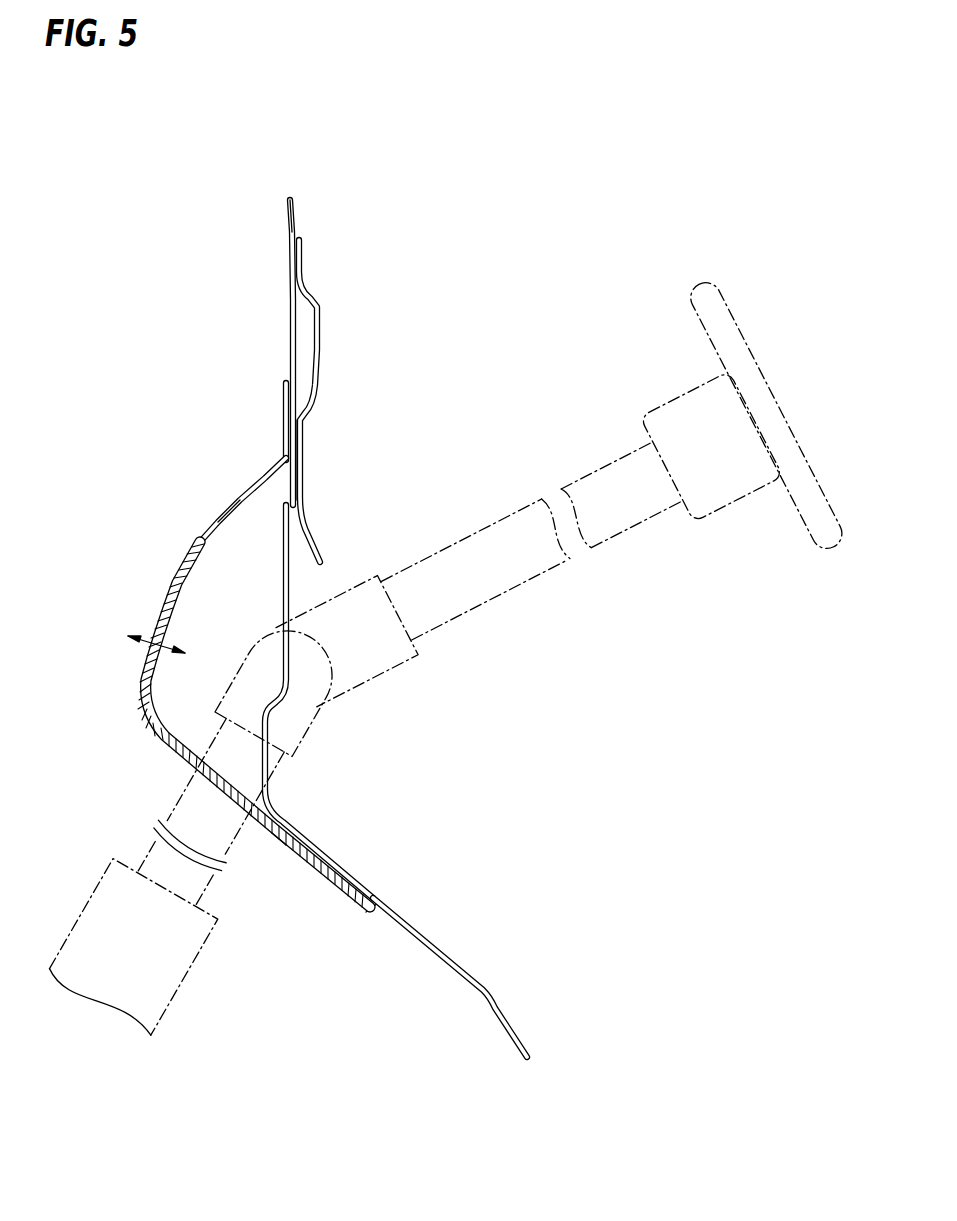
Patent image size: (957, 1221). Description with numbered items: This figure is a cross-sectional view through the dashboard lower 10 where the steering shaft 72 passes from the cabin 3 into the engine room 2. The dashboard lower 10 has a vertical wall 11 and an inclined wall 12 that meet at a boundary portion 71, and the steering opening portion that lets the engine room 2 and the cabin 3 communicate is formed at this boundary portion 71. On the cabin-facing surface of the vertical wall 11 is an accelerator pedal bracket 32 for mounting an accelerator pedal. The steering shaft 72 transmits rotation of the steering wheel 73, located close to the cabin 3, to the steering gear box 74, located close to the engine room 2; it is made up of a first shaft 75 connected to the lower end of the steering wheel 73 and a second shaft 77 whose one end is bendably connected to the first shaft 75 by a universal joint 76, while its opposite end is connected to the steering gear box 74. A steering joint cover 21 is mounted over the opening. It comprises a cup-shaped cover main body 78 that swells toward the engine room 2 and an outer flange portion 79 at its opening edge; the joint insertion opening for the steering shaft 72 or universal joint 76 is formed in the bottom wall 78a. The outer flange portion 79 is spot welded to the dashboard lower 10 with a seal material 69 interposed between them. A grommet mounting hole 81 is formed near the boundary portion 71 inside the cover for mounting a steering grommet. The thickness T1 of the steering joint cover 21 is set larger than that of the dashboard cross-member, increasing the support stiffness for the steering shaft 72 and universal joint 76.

The engine room 2 is at (150, 262).
The cabin 3 is at (461, 302).
The dashboard lower 10 is at (298, 216).
The vertical wall 11 is at (290, 326).
The inclined wall 12 is at (447, 950).
The steering joint cover 21 is at (166, 493).
The accelerator pedal bracket 32 is at (320, 345).
The seal material 69 is at (300, 425).
The boundary portion 71 is at (283, 818).
The steering shaft 72 is at (440, 659).
The steering wheel 73 is at (733, 322).
The steering gear box 74 is at (177, 993).
The first shaft 75 is at (500, 522).
The universal joint 76 is at (397, 667).
The second shaft 77 is at (173, 803).
The cover main body 78 is at (175, 594).
The bottom wall 78a is at (278, 832).
The outer flange portion 79 is at (286, 410).
The grommet mounting hole 81 is at (268, 730).
The thickness of the steering joint cover T1 is at (148, 626).